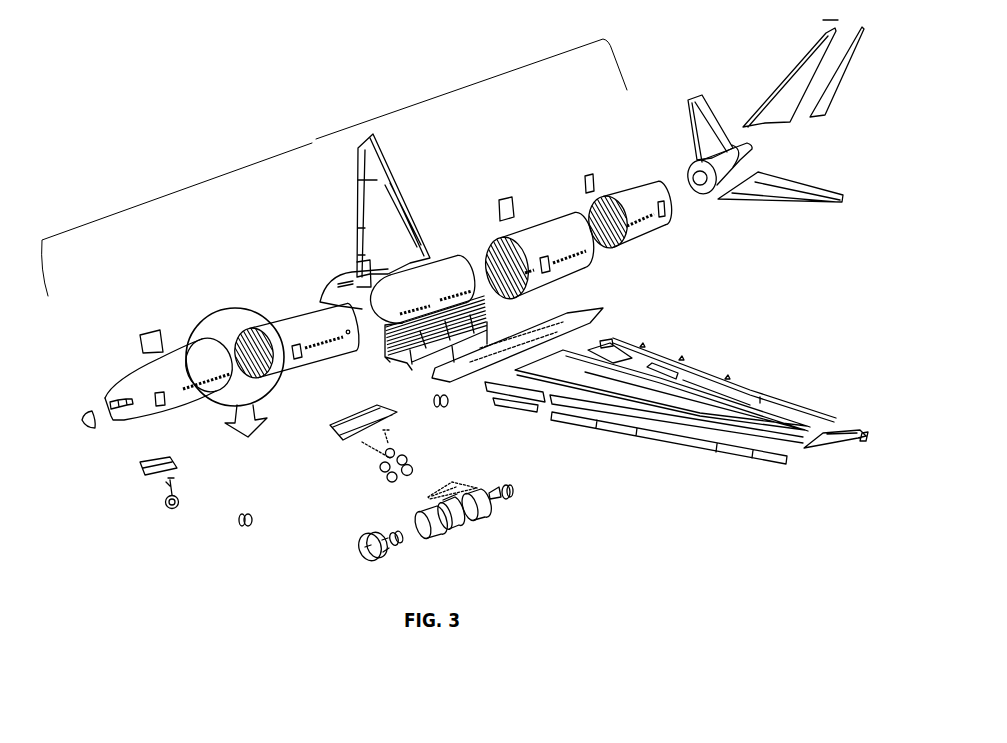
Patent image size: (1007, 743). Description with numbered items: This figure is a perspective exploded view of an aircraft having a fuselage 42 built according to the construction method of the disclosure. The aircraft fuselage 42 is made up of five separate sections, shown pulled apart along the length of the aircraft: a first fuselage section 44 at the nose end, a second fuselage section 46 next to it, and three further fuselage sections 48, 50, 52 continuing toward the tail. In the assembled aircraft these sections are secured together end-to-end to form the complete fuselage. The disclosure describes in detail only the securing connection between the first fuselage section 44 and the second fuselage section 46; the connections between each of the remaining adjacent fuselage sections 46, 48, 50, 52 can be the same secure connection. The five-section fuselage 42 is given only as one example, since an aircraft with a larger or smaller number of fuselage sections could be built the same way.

The aircraft fuselage 42 is at (314, 141).
The first fuselage section 44 is at (124, 375).
The second fuselage section 46 is at (298, 303).
The fuselage section 48 is at (380, 270).
The fuselage section 50 is at (533, 219).
The fuselage section 52 is at (610, 189).